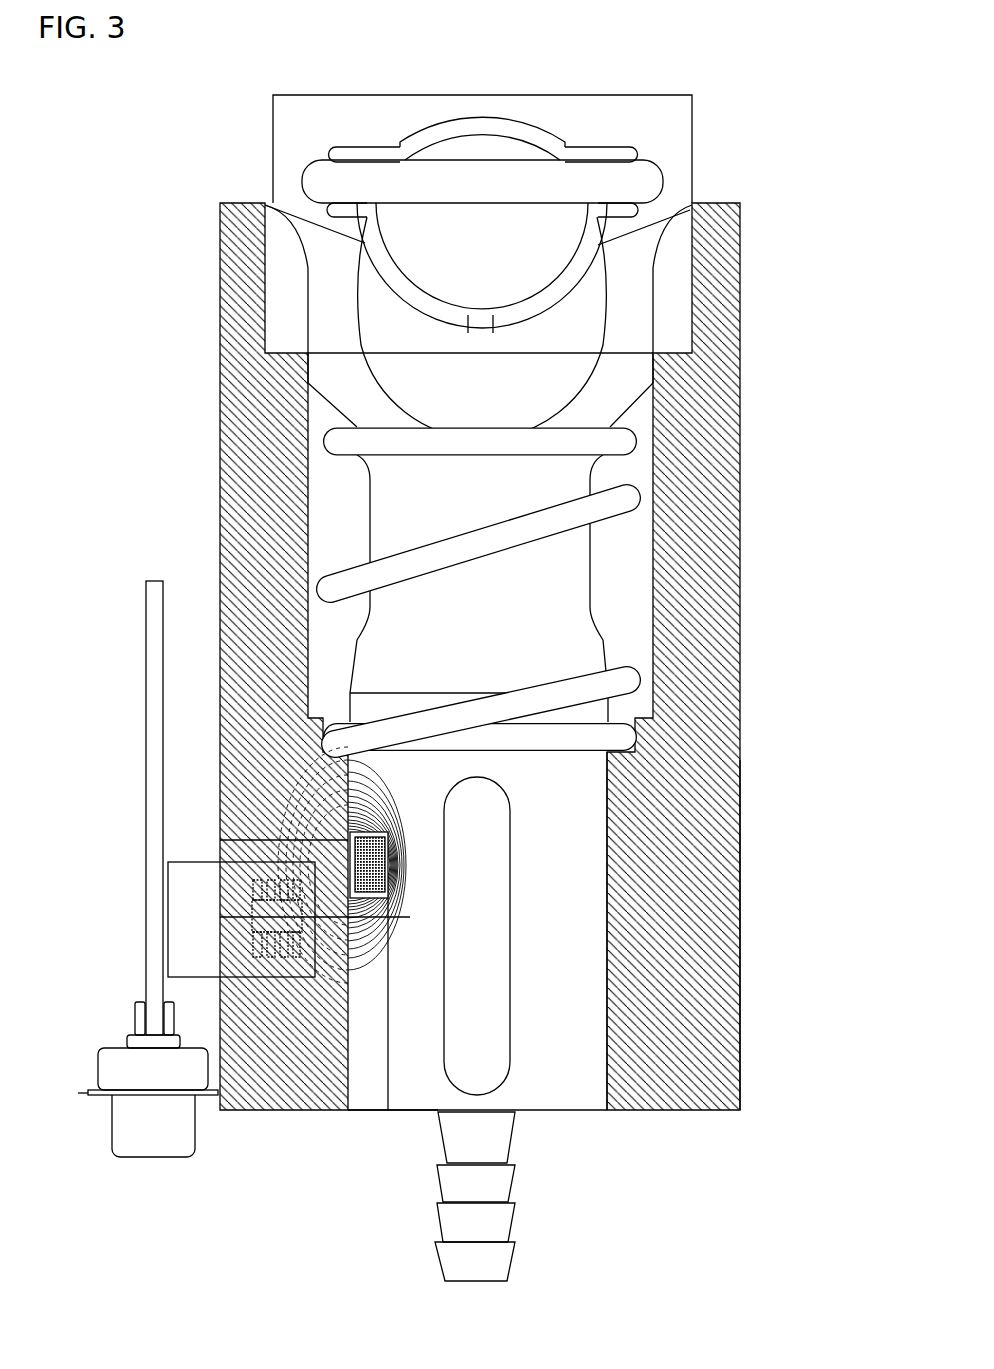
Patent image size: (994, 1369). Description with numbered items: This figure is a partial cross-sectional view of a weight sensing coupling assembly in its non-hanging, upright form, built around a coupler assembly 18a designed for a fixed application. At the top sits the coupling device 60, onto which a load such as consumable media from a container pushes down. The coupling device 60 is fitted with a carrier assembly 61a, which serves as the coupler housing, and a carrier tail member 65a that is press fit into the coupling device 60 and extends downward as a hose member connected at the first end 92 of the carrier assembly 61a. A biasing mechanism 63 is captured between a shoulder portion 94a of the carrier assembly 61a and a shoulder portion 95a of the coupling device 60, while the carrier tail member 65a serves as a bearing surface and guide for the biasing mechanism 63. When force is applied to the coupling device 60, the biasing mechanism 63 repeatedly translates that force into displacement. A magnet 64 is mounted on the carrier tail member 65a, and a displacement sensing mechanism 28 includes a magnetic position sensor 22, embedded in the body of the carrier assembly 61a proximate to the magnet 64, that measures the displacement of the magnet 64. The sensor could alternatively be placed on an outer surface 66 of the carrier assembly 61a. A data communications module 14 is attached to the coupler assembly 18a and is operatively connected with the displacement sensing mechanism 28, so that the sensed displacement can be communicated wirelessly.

The coupler assembly 18a is at (729, 111).
The coupling device 60 is at (577, 325).
The shoulder portion 95a is at (633, 408).
The biasing mechanism 63 is at (620, 500).
The shoulder portion 94a is at (625, 745).
The carrier assembly 61a is at (660, 952).
The outer surface 66 is at (220, 703).
The data communications module 14 is at (153, 792).
The magnet 64 is at (380, 862).
The magnetic position sensor 22 is at (262, 938).
The displacement sensing mechanism 28 is at (318, 968).
The first end 92 is at (361, 1162).
The carrier tail member 65a is at (558, 1067).